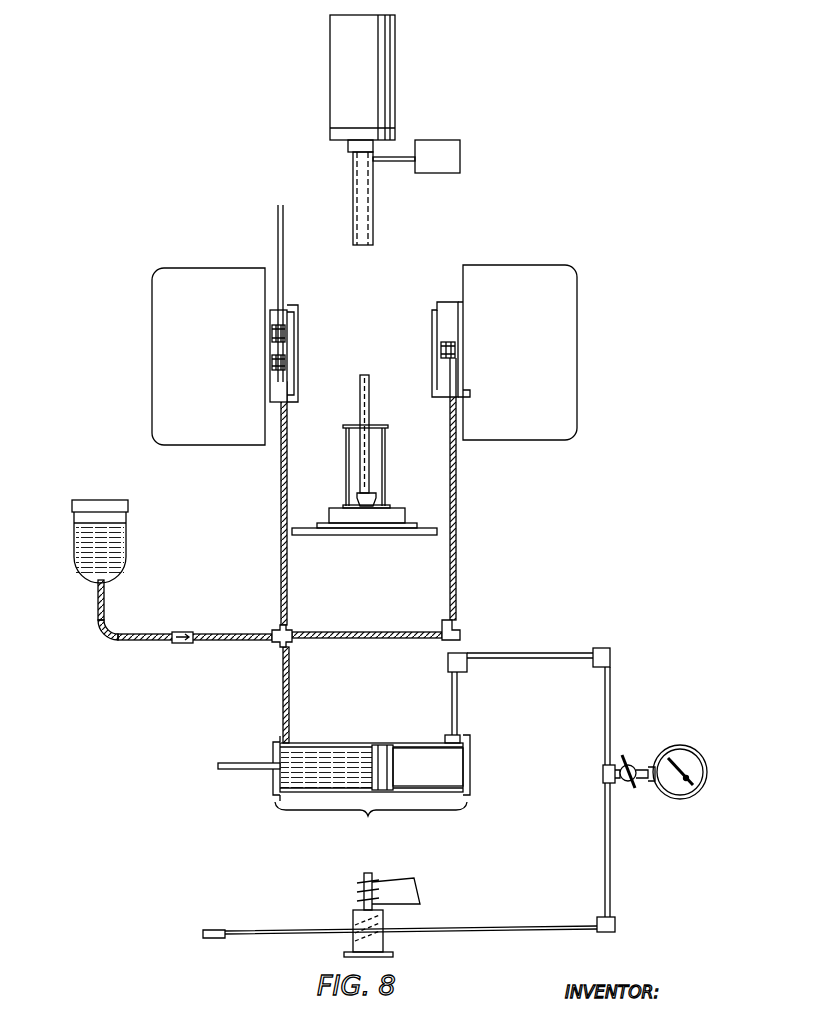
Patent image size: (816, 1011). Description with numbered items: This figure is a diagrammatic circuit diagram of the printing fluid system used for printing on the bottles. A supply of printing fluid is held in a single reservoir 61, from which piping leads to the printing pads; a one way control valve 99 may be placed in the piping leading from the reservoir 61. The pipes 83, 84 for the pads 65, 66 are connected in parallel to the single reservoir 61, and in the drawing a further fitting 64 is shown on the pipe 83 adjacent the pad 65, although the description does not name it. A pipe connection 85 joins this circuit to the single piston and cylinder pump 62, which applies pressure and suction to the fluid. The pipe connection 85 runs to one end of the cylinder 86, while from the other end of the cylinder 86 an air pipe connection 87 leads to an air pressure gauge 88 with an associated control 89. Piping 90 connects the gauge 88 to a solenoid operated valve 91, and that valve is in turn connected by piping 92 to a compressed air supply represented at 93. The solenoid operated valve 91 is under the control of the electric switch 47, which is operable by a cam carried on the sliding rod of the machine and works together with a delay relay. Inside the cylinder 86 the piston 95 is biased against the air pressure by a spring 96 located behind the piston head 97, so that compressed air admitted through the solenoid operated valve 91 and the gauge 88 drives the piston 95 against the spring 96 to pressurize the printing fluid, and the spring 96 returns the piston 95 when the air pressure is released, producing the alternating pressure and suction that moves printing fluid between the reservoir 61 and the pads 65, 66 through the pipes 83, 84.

The electric switch 47 is at (420, 893).
The reservoir 61 is at (128, 551).
The piston and cylinder pump 62 is at (344, 776).
The fitting 64 is at (292, 341).
The pad 65 is at (289, 367).
The pad 66 is at (445, 358).
The pipe 83 is at (281, 476).
The pipe 84 is at (457, 462).
The pipe connection 85 is at (283, 688).
The cylinder 86 is at (315, 747).
The air pipe connection 87 is at (457, 700).
The air pressure gauge 88 is at (664, 796).
The control 89 is at (620, 787).
The piping 90 is at (605, 887).
The solenoid operated valve 91 is at (383, 915).
The piping 92 is at (292, 931).
The compressed air supply 93 is at (211, 930).
The piston 95 is at (250, 766).
The spring 96 is at (347, 757).
The piston head 97 is at (380, 752).
The one way control valve 99 is at (181, 632).